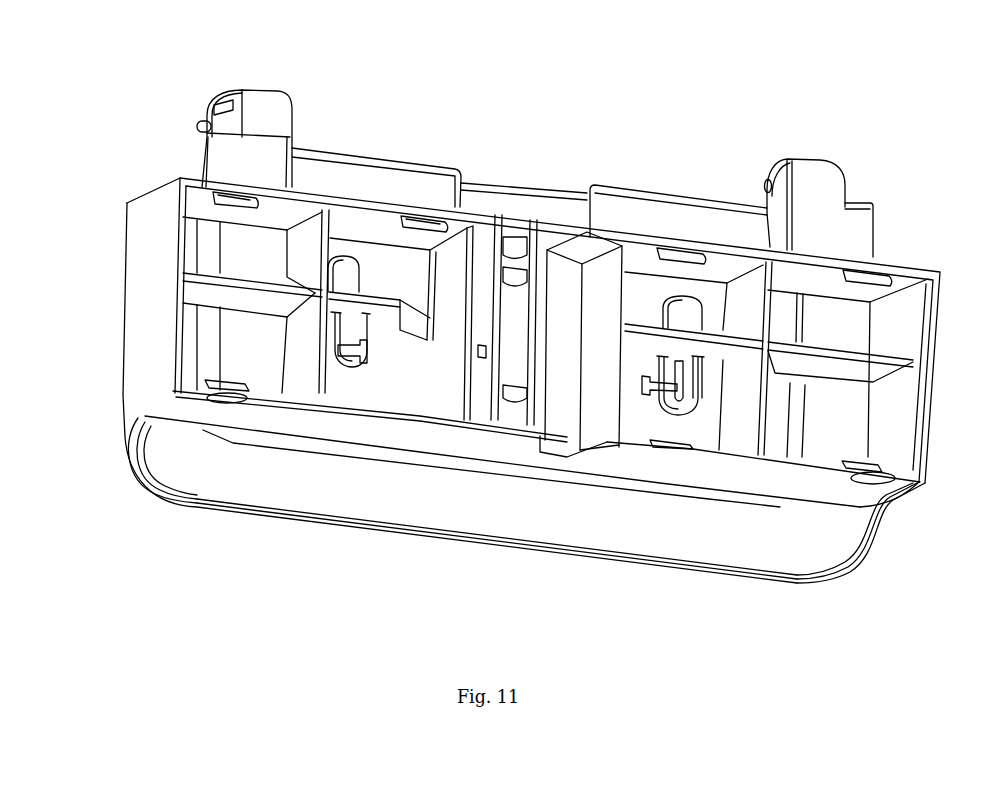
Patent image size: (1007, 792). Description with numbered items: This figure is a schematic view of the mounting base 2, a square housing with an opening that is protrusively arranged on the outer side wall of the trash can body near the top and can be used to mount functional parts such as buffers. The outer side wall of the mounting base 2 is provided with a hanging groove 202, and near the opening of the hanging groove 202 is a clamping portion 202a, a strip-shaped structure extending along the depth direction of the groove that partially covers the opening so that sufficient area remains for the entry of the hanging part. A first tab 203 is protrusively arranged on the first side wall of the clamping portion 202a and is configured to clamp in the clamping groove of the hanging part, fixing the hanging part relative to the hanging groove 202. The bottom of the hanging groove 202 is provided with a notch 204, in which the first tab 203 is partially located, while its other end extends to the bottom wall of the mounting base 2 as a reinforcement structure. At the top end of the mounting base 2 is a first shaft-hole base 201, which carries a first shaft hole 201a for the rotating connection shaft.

The mounting base 2 is at (148, 117).
The first shaft-hole base 201 is at (813, 175).
The first shaft hole 201a is at (767, 183).
The hanging groove 202 is at (692, 393).
The clamping portion 202a is at (670, 398).
The first tab 203 is at (657, 393).
The notch 204 is at (340, 368).